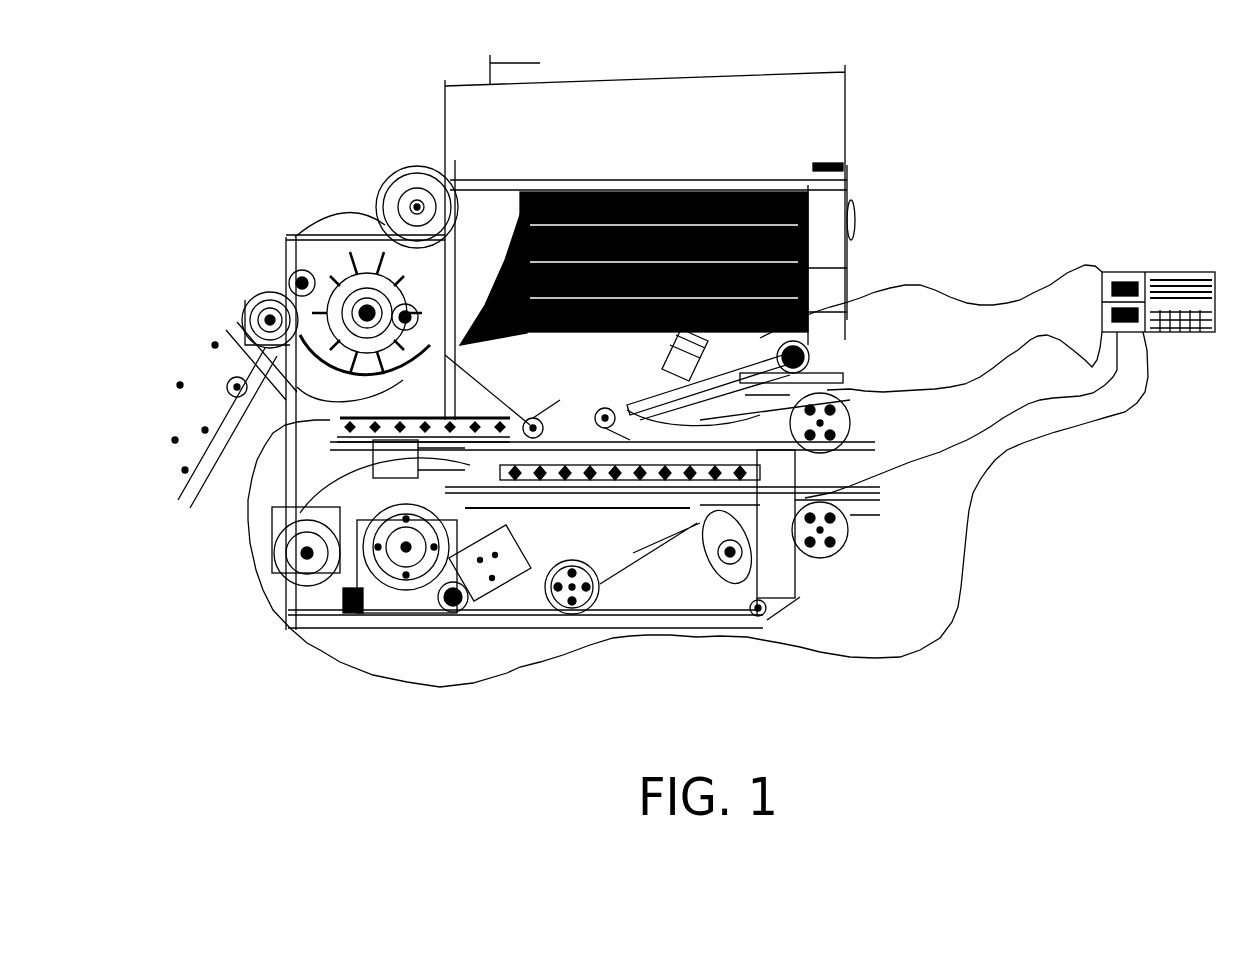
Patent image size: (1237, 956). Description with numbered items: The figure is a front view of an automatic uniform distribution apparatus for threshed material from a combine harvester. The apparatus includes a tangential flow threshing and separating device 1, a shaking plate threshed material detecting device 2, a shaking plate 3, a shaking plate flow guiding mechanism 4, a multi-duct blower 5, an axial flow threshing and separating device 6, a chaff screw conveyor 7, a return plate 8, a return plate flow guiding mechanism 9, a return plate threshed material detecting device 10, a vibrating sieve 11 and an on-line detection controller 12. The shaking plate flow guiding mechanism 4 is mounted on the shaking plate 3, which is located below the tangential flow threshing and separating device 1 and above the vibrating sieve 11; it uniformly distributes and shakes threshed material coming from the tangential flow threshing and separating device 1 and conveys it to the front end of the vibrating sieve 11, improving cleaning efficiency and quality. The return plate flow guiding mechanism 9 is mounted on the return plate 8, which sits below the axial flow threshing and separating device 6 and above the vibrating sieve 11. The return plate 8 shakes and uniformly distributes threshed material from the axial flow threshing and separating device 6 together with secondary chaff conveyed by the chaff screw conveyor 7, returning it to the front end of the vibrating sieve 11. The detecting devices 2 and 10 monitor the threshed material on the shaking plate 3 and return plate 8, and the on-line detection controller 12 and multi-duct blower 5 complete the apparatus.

The tangential flow threshing and separating device 1 is at (286, 240).
The shaking plate threshed material detecting device 2 is at (290, 282).
The shaking plate 3 is at (340, 437).
The shaking plate flow guiding mechanism 4 is at (373, 443).
The multi-duct blower 5 is at (397, 447).
The axial flow threshing and separating device 6 is at (835, 185).
The chaff screw conveyor 7 is at (705, 335).
The return plate 8 is at (805, 350).
The return plate flow guiding mechanism 9 is at (807, 373).
The return plate threshed material detecting device 10 is at (843, 443).
The vibrating sieve 11 is at (846, 545).
The on-line detection controller 12 is at (1180, 277).